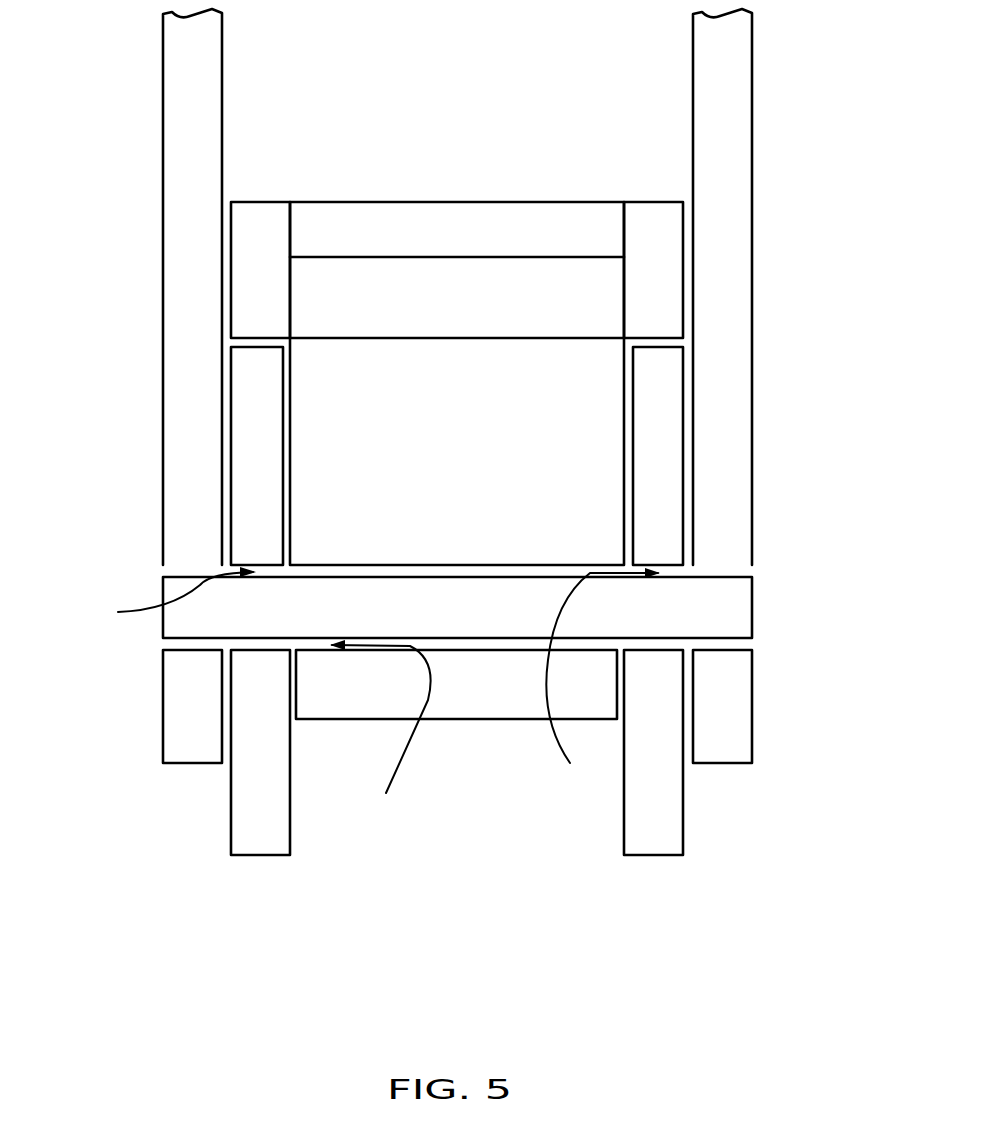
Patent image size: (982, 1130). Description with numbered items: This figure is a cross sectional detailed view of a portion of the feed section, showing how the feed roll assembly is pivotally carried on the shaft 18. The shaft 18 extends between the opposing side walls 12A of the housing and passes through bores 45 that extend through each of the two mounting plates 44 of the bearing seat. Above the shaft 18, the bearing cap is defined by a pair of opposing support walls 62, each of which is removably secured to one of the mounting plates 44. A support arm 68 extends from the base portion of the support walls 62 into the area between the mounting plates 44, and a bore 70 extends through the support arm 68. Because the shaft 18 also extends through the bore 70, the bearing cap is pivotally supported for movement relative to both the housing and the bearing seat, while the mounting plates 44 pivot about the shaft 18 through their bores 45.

The side walls 12A is at (192, 60).
The shaft 18 is at (703, 612).
The mounting plates 44 is at (253, 530).
The bores 45 is at (371, 680).
The support walls 62 is at (262, 259).
The support arm 68 is at (322, 310).
The bore 70 is at (380, 736).